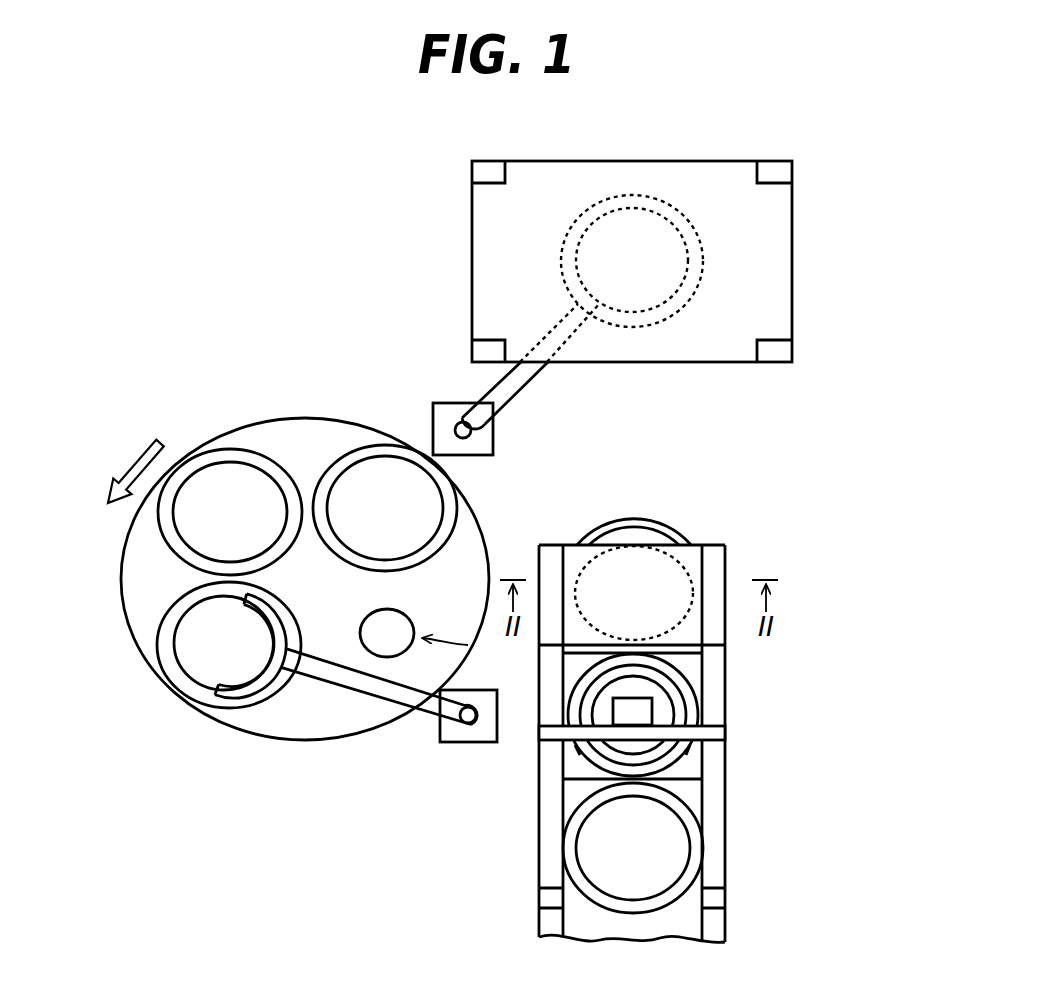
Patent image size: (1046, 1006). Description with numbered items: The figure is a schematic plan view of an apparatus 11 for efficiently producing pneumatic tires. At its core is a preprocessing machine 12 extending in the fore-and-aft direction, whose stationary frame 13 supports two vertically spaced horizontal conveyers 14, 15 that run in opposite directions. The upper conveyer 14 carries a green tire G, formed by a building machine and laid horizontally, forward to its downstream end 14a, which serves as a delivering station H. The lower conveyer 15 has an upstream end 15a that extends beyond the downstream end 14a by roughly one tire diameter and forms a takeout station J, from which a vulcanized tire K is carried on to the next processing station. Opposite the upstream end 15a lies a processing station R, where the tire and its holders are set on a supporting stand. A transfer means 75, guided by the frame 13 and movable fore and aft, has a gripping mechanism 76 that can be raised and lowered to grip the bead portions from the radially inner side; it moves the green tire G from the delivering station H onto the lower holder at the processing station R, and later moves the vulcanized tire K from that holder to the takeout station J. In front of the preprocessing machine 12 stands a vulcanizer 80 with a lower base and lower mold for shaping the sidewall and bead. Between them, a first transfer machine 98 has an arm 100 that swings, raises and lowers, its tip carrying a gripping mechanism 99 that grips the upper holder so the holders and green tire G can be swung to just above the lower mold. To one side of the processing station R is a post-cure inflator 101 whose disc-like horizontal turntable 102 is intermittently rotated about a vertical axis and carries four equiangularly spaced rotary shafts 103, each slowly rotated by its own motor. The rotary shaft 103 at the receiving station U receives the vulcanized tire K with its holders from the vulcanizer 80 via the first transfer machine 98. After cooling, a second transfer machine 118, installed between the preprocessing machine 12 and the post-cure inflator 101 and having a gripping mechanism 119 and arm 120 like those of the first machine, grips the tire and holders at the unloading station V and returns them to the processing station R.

The vulcanizer 80 is at (632, 158).
The vulcanized tire K is at (704, 262).
The gripping mechanism 99 is at (572, 250).
The arm 100 is at (500, 392).
The first transfer machine 98 is at (496, 428).
The post-cure inflator 101 is at (258, 418).
The unloading station V is at (213, 520).
The turntable 102 is at (158, 646).
The gripping mechanism 119 is at (235, 694).
The arm 120 is at (334, 677).
The second transfer machine 118 is at (437, 733).
The rotary shaft 103 is at (373, 626).
The receiving station U is at (467, 662).
The apparatus 11 is at (700, 446).
The preprocessing machine 12 is at (745, 651).
The green tire G is at (605, 531).
The processing station R is at (650, 558).
The upstream end 15a is at (697, 670).
The conveyer 15 is at (697, 702).
The downstream end 14a is at (702, 762).
The gripping mechanism 76 is at (582, 702).
The transfer means 75 is at (730, 743).
The takeout station J is at (583, 753).
The delivering station H is at (603, 853).
The frame 13 is at (722, 919).
The conveyer 14 is at (641, 928).